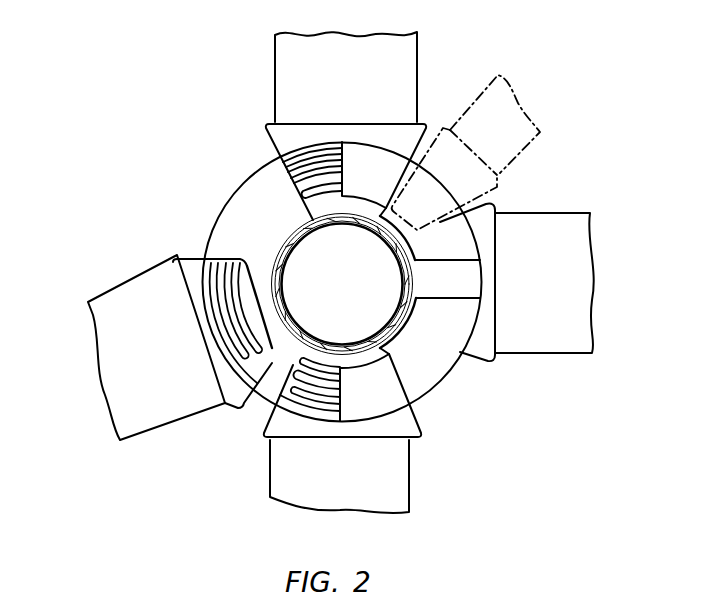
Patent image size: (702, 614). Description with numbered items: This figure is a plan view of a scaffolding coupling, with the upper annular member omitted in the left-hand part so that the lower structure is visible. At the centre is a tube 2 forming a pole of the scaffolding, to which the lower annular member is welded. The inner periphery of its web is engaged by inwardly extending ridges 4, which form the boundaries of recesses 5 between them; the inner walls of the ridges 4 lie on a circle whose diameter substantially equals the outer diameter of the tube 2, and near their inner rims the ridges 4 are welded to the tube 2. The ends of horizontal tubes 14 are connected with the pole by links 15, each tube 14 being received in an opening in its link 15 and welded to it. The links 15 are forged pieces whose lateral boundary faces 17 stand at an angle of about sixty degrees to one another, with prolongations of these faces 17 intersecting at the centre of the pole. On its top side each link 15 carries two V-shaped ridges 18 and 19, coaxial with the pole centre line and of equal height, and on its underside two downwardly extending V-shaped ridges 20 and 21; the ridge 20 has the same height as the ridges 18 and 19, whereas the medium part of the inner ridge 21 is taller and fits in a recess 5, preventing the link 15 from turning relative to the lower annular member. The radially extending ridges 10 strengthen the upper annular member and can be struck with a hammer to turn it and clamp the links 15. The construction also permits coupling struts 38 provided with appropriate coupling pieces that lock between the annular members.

The tube 2 is at (373, 343).
The ridges 4 is at (289, 226).
The recesses 5 is at (276, 268).
The radially extending ridges 10 is at (397, 377).
The horizontal tubes 14 is at (398, 53).
The link 15 is at (430, 129).
The lateral boundary faces 17 is at (250, 403).
The ridge 18 is at (300, 152).
The ridge 19 is at (330, 190).
The ridge 20 is at (212, 268).
The inner ridge 21 is at (282, 333).
The struts 38 is at (556, 131).